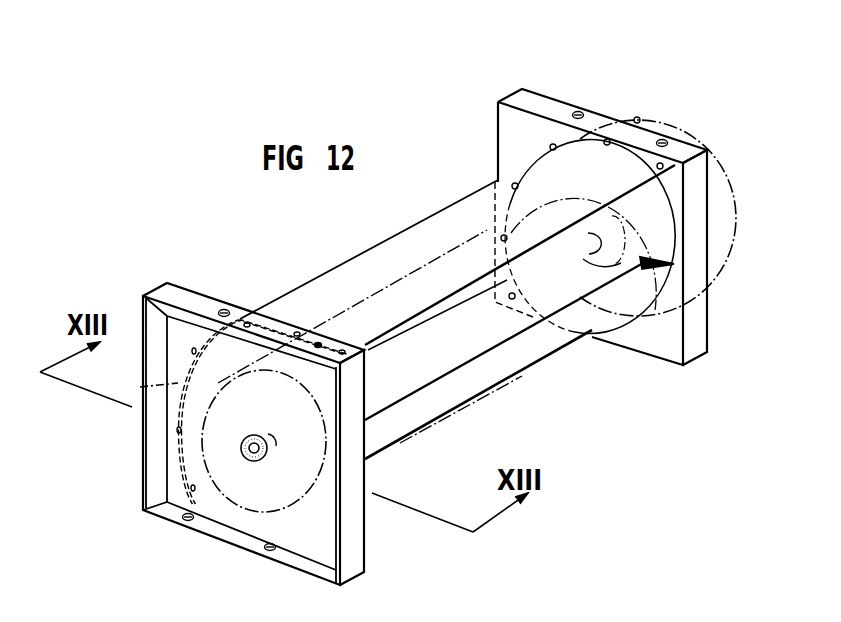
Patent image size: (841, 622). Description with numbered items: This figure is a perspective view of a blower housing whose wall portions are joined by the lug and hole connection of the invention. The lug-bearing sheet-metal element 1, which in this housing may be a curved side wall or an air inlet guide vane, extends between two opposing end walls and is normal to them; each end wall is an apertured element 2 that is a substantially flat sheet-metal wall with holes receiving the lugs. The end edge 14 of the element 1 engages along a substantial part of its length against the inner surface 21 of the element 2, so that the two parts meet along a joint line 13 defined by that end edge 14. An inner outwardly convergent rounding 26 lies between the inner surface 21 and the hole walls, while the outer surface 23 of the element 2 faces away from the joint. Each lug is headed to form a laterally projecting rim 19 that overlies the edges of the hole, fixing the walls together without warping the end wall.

The lug-bearing sheet-metal element 1 is at (521, 240).
The apertured element 2 is at (697, 195).
The joint line 13 is at (132, 388).
The end edge 14 is at (607, 142).
The laterally projecting rim 19 is at (178, 430).
The inner surface 21 is at (667, 333).
The outer surface 23 is at (228, 507).
The inner outwardly convergent rounding 26 is at (637, 120).